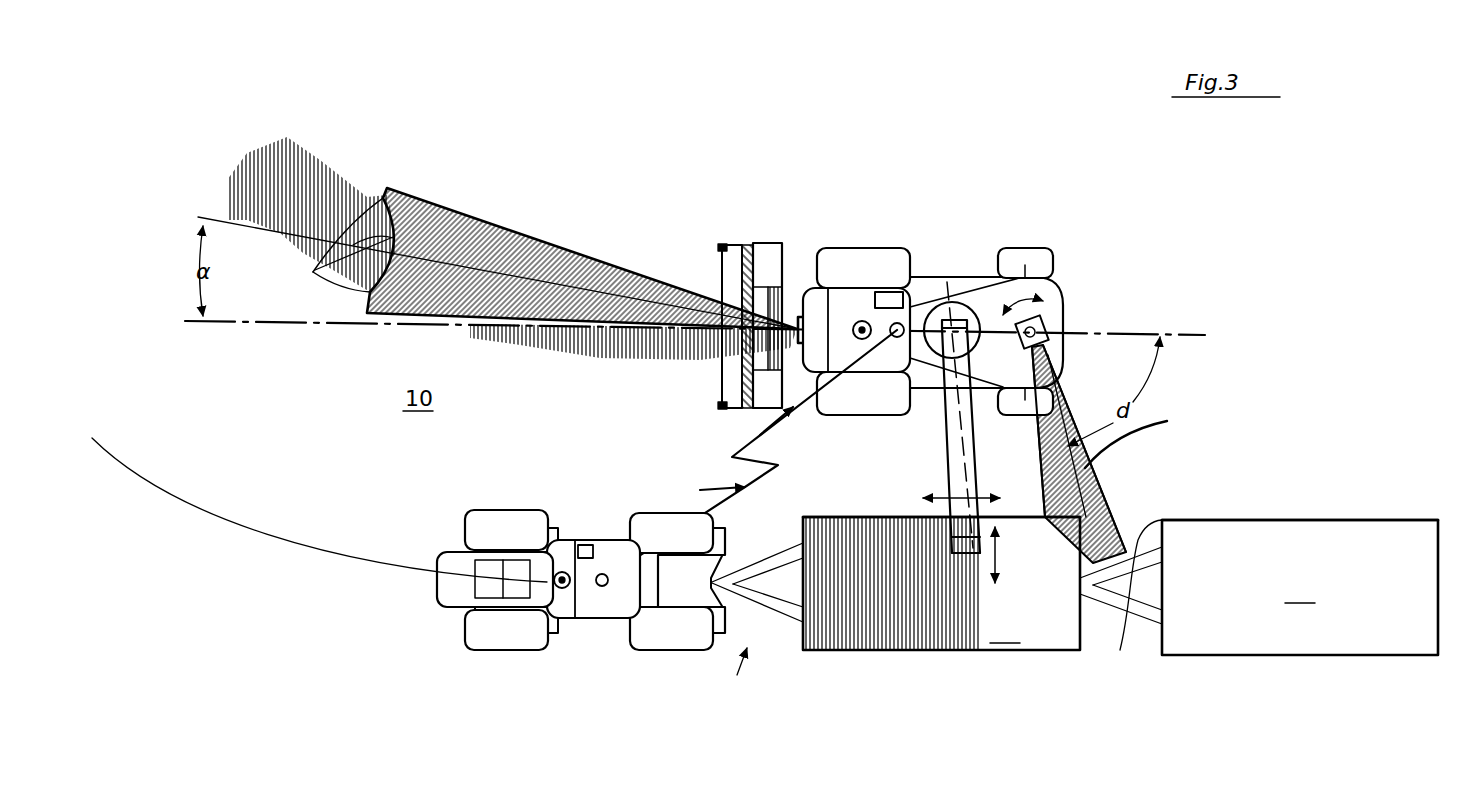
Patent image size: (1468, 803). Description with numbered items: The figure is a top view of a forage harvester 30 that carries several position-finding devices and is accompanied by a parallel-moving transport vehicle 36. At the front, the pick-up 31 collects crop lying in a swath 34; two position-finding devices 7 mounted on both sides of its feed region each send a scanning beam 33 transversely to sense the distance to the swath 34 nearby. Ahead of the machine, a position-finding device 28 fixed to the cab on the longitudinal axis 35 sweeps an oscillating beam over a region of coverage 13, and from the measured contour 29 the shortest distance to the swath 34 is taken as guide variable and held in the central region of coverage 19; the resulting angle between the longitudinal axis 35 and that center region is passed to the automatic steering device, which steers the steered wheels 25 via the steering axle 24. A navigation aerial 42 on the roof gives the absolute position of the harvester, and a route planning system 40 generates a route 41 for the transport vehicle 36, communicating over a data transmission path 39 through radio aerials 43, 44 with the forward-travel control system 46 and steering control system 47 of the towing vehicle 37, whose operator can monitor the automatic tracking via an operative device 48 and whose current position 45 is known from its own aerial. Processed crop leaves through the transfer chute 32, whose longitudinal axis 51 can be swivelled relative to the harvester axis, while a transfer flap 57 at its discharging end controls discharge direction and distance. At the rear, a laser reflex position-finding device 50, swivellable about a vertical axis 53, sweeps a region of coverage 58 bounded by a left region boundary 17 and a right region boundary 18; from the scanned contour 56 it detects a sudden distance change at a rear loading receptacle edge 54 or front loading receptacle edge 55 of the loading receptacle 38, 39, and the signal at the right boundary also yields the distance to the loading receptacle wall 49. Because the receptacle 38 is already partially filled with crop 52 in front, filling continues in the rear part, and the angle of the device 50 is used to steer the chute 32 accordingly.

The position-finding device 7 is at (722, 248).
The region of coverage 13 is at (478, 240).
The left region boundary 17 is at (1128, 513).
The right region boundary 18 is at (1040, 460).
The central region of coverage 19 is at (533, 277).
The steering axle 24 is at (1030, 262).
The steered wheels 25 is at (1047, 267).
The position-finding device 28 is at (812, 318).
The measured contour 29 is at (335, 249).
The forage harvester 30 is at (942, 262).
The pick-up 31 is at (768, 245).
The transfer chute 32 is at (950, 425).
The scanning beam 33 is at (720, 268).
The swath 34 is at (305, 185).
The longitudinal axis 35 is at (1198, 335).
The transport vehicle 36 is at (732, 680).
The towing vehicle 37 is at (475, 506).
The loading receptacle 38 is at (941, 583).
The loading receptacle / data transmission path 39 is at (740, 442).
The route planning system 40 is at (882, 292).
The route 41 is at (233, 527).
The navigation aerial 42 is at (860, 322).
The radio aerial 43 is at (895, 338).
The radio aerial / navigation aerial 44 is at (602, 588).
The current position 45 is at (562, 590).
The forward-travel control system 46 is at (487, 593).
The steering control system 47 is at (517, 600).
The operative device 48 is at (585, 545).
The loading receptacle wall 49 is at (862, 505).
The position-finding device 50 is at (1045, 325).
The longitudinal axis of the transfer chute 51 is at (965, 470).
The crop 52 is at (872, 590).
The vertical axis 53 is at (1047, 343).
The rear loading receptacle edge 54 is at (1078, 518).
The front loading receptacle edge 55 is at (800, 617).
The scanned contour 56 is at (1082, 514).
The transfer flap 57 is at (957, 548).
The region of coverage 58 is at (1146, 437).